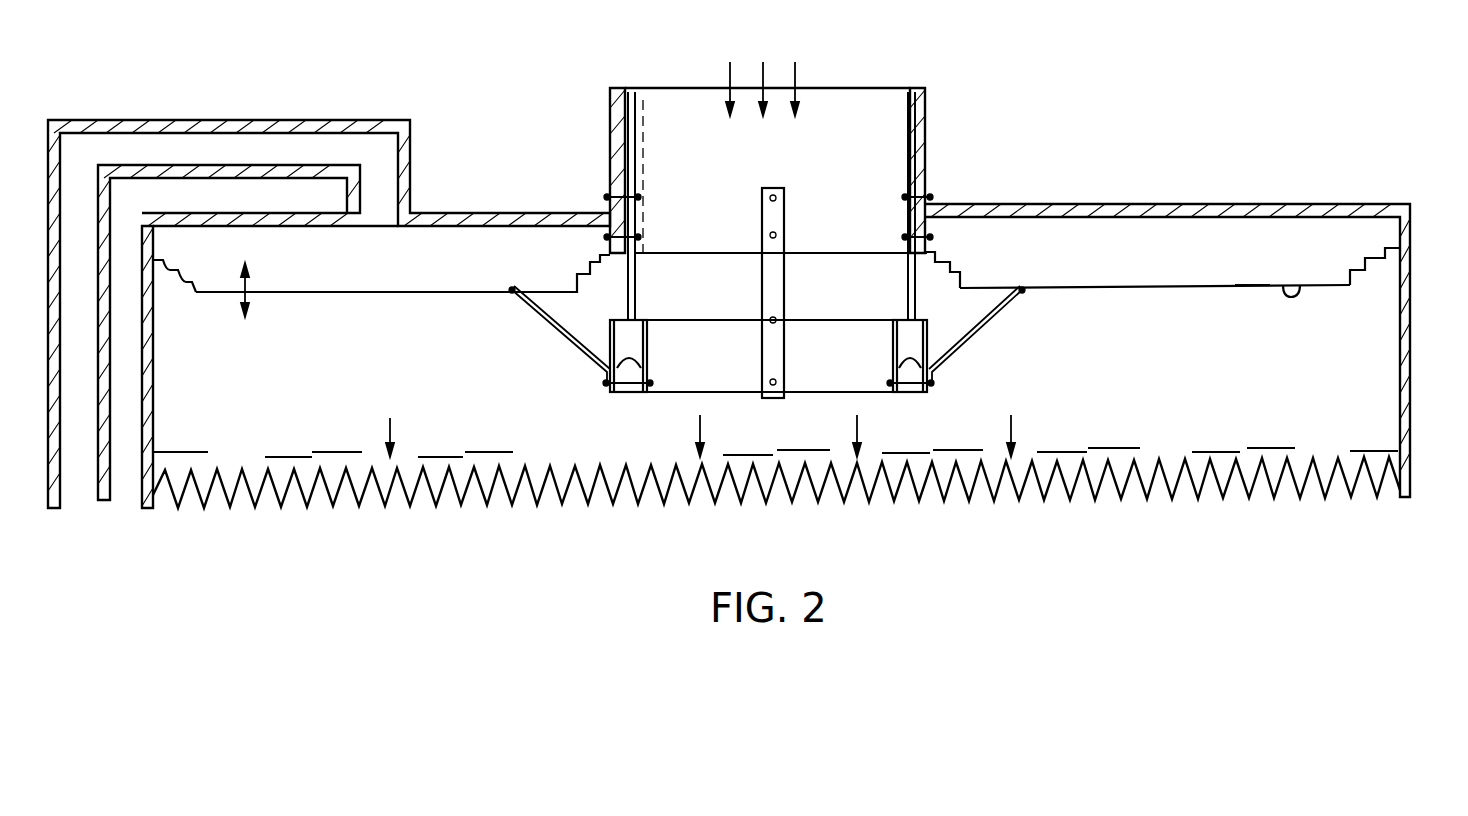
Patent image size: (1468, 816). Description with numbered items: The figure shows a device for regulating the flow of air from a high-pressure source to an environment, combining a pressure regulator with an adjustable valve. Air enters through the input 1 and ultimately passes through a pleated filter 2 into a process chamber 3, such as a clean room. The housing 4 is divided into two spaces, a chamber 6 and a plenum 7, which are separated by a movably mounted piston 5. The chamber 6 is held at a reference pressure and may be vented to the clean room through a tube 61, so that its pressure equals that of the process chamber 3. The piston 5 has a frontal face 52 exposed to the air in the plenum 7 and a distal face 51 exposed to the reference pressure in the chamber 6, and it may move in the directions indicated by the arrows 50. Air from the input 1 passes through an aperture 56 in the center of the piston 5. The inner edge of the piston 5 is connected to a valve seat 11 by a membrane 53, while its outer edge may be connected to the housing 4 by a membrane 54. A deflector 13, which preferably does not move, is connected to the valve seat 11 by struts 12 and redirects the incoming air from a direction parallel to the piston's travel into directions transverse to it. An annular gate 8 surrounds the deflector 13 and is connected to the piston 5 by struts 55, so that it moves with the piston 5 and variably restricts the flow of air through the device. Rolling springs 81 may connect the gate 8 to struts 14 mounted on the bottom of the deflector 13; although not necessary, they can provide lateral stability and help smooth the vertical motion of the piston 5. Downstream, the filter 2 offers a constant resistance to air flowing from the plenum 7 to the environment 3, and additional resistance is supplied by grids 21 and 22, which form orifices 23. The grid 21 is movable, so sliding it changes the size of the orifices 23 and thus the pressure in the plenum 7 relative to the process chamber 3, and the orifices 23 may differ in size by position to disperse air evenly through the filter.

The input 1 is at (822, 66).
The pleated filter 2 is at (1320, 490).
The process chamber 3 is at (783, 545).
The housing 4 is at (1412, 372).
The piston 5 is at (1220, 262).
The chamber 6 is at (1145, 271).
The plenum 7 is at (1178, 337).
The annular gate 8 is at (613, 340).
The valve seat 11 is at (610, 255).
The struts 12 is at (636, 292).
The deflector 13 is at (818, 318).
The struts 14 is at (650, 340).
The grid 21 is at (1270, 447).
The grid 22 is at (1215, 447).
The orifices 23 is at (540, 455).
The arrows 50 is at (247, 293).
The distal face 51 is at (1251, 284).
The frontal face 52 is at (1298, 284).
The membrane 53 is at (962, 268).
The membrane 54 is at (183, 270).
The struts 55 is at (970, 330).
The aperture 56 is at (585, 290).
The tube 61 is at (243, 120).
The rolling springs 81 is at (630, 390).